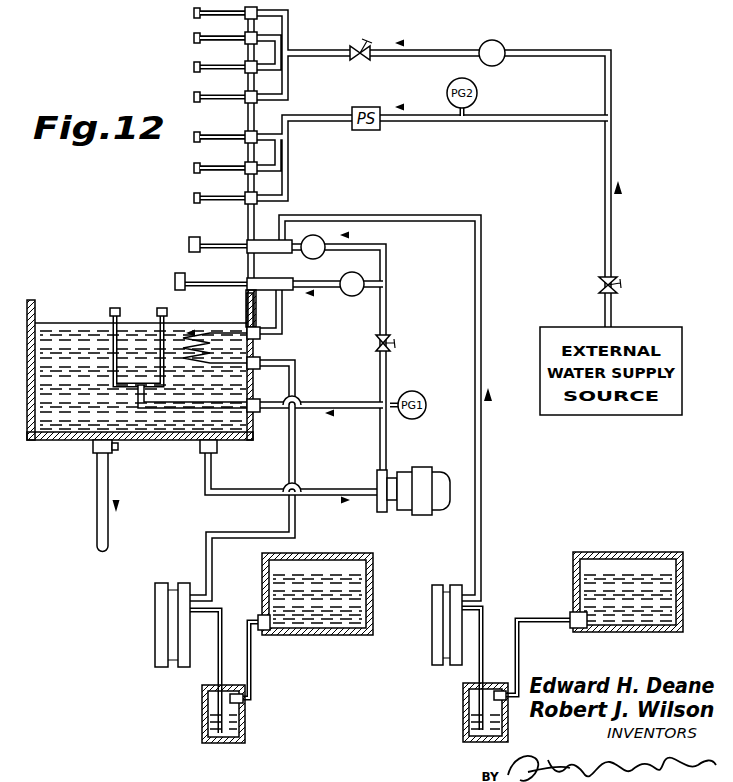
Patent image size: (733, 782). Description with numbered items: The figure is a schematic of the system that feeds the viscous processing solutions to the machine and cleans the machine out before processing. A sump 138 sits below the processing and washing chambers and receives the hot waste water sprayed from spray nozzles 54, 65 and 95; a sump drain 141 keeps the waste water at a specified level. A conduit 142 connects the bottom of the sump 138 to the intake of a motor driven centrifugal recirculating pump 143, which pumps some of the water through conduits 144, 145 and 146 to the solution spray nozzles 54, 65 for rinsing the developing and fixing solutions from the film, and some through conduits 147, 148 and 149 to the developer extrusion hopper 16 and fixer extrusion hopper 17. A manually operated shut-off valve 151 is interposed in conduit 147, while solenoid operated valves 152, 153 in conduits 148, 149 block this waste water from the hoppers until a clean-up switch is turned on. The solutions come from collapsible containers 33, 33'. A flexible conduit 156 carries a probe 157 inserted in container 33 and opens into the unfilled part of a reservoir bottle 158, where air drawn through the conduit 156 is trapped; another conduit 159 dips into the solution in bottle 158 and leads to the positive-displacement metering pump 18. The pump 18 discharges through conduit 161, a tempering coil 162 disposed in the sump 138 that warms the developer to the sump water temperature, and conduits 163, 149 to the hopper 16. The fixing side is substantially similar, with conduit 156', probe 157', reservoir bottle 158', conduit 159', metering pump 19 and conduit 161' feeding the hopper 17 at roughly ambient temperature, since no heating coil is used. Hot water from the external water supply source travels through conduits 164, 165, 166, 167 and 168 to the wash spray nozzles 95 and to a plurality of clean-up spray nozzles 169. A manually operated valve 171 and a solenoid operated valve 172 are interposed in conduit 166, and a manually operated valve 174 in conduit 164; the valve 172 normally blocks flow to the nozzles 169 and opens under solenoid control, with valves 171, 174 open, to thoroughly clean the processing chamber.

The developer extrusion hopper 16 is at (175, 282).
The fixer extrusion hopper 17 is at (188, 245).
The metering pump 18 is at (155, 597).
The metering pump 19 is at (433, 615).
The container 33 is at (332, 594).
The container 33' is at (641, 584).
The solution spray nozzle 54 is at (111, 309).
The solution spray nozzle 65 is at (166, 310).
The wash spray nozzle 95 is at (194, 198).
The sump 138 is at (48, 441).
The sump drain 141 is at (94, 448).
The conduit 142 is at (288, 482).
The recirculating pump 143 is at (424, 505).
The conduit 144 is at (388, 444).
The conduit 145 is at (315, 401).
The conduit 146 is at (158, 330).
The conduit 147 is at (382, 299).
The conduit 148 is at (226, 244).
The conduit 149 is at (212, 282).
The shut-off valve 151 is at (391, 348).
The solenoid operated valve 152 is at (318, 237).
The solenoid operated valve 153 is at (352, 297).
The flexible conduit 156 is at (263, 660).
The flexible conduit 156' is at (535, 657).
The probe 157 is at (280, 636).
The probe 157' is at (592, 635).
The reservoir bottle 158 is at (240, 714).
The reservoir bottle 158' is at (508, 713).
The conduit 159 is at (190, 671).
The conduit 159' is at (449, 669).
The conduit 161 is at (292, 505).
The conduit 161' is at (405, 408).
The tempering coil 162 is at (200, 336).
The conduit 163 is at (283, 316).
The conduit 164 is at (612, 244).
The conduit 165 is at (541, 122).
The conduit 166 is at (563, 52).
The conduit 167 is at (240, 160).
The conduit 168 is at (241, 35).
The clean-up spray nozzle 169 is at (194, 97).
The manually operated valve 171 is at (368, 40).
The solenoid operated valve 172 is at (500, 44).
The manually operated valve 174 is at (619, 283).